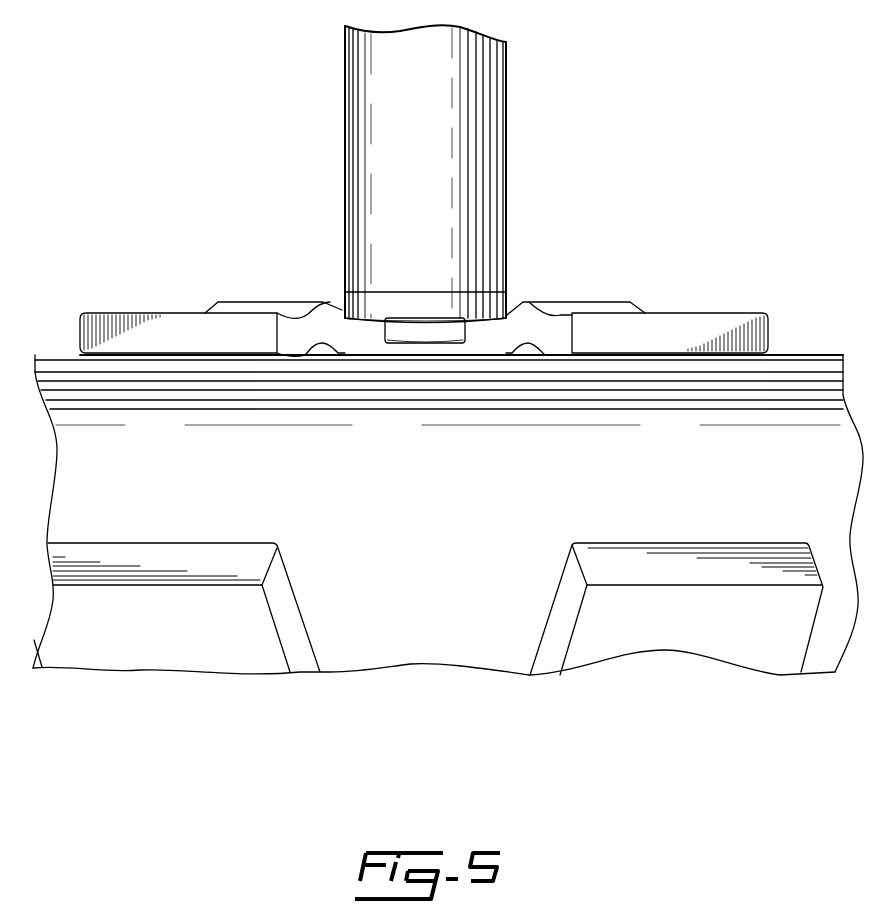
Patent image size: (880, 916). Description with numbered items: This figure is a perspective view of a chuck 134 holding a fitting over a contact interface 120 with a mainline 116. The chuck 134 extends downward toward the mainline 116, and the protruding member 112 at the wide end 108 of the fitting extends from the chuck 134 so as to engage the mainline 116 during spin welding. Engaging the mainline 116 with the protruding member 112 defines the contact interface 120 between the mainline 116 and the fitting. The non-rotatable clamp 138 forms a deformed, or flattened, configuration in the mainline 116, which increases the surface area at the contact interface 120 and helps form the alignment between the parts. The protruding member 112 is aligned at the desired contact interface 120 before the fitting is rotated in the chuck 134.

The wide end 108 is at (360, 307).
The protruding member 112 is at (443, 330).
The mainline 116 is at (480, 480).
The contact interface 120 is at (418, 368).
The chuck 134 is at (373, 212).
The non-rotatable clamp 138 is at (635, 568).